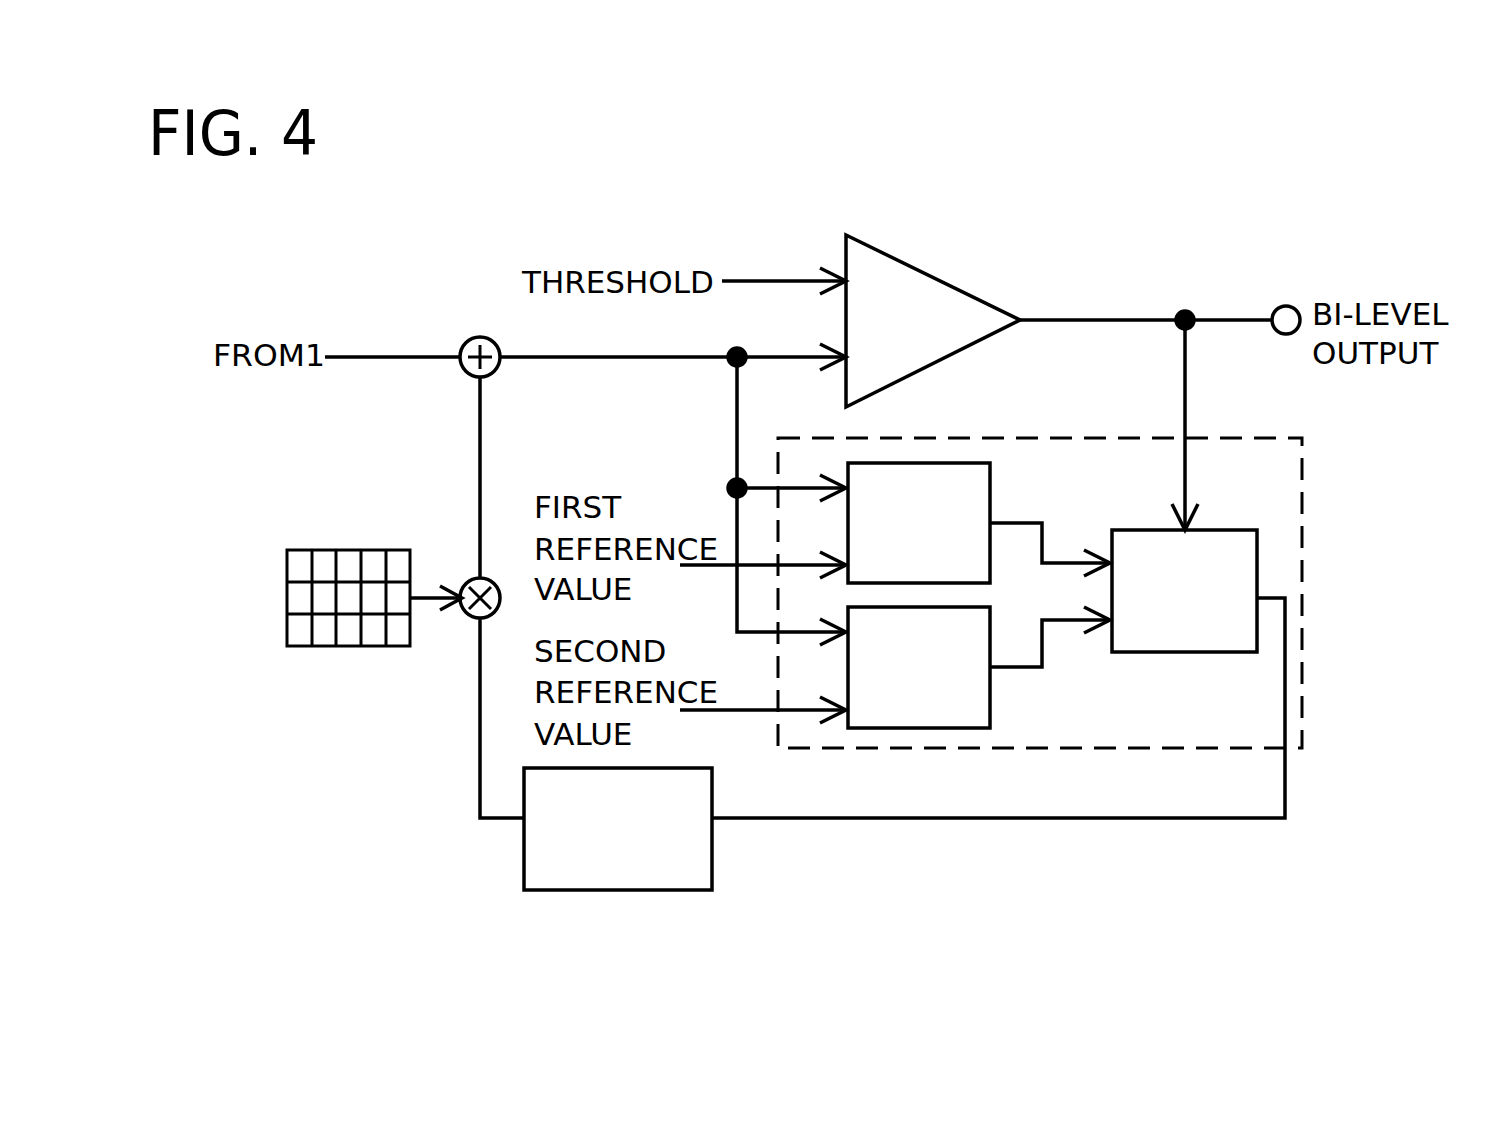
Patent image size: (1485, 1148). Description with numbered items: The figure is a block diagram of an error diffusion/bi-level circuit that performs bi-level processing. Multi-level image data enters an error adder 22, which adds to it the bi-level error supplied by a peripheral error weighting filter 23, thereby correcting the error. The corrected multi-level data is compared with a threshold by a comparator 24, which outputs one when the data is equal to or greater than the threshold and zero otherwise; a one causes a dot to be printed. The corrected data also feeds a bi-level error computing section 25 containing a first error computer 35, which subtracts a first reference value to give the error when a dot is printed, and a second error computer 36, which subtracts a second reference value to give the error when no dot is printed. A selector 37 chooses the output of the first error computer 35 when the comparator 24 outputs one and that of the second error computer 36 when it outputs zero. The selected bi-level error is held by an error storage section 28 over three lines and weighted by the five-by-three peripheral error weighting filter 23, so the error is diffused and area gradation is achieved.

The error adder 22 is at (494, 352).
The peripheral error weighting filter 23 is at (375, 550).
The comparator 24 is at (933, 319).
The bi-level error computing section 25 is at (1302, 553).
The error storage section 28 is at (697, 848).
The first error computer 35 is at (935, 468).
The second error computer 36 is at (962, 705).
The selector 37 is at (1209, 543).